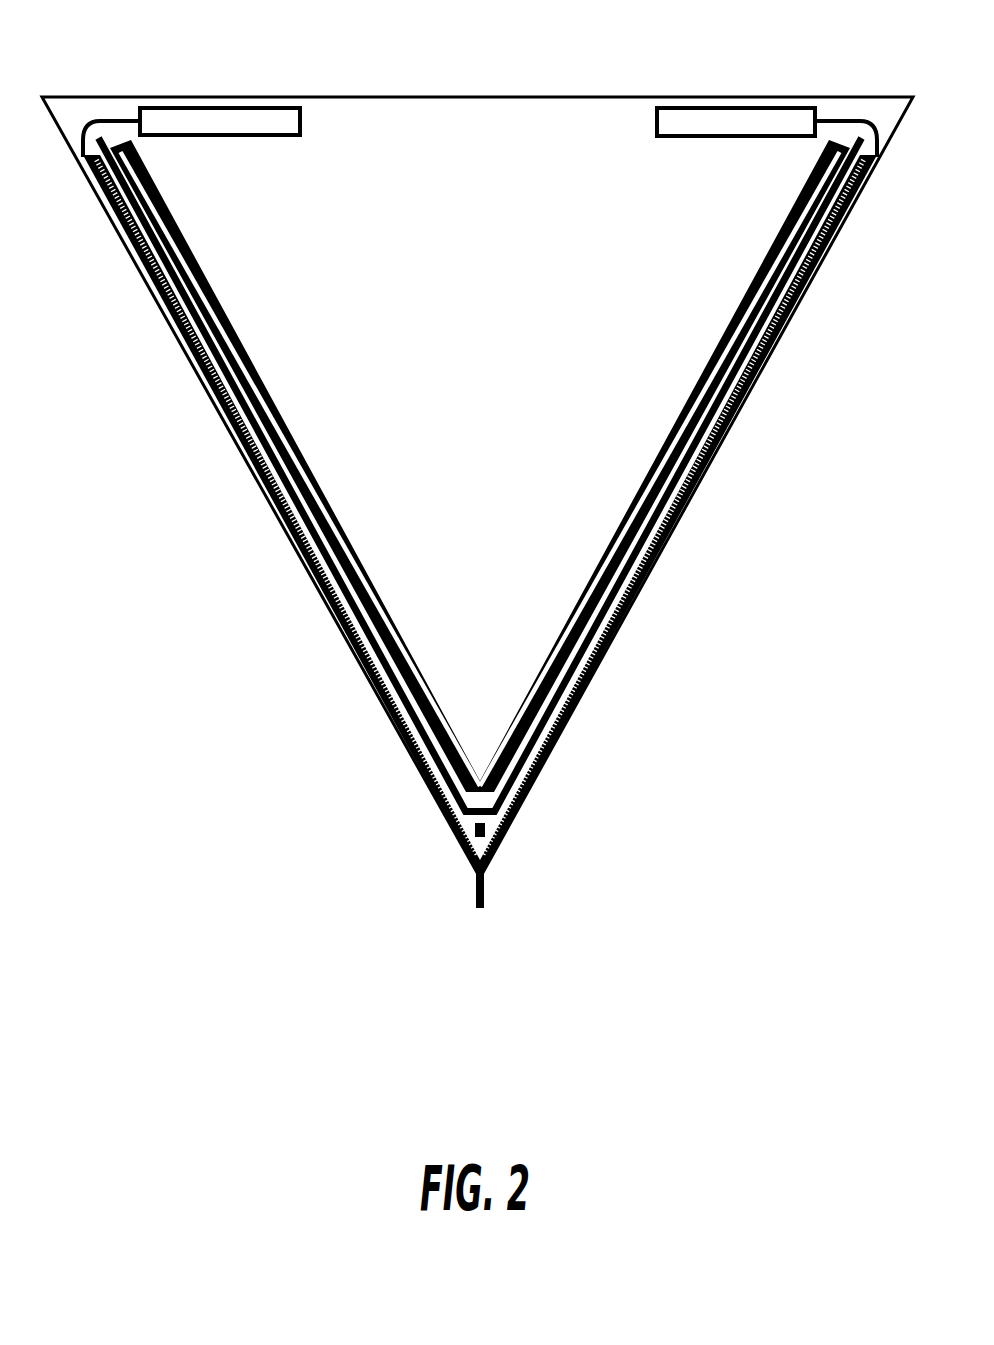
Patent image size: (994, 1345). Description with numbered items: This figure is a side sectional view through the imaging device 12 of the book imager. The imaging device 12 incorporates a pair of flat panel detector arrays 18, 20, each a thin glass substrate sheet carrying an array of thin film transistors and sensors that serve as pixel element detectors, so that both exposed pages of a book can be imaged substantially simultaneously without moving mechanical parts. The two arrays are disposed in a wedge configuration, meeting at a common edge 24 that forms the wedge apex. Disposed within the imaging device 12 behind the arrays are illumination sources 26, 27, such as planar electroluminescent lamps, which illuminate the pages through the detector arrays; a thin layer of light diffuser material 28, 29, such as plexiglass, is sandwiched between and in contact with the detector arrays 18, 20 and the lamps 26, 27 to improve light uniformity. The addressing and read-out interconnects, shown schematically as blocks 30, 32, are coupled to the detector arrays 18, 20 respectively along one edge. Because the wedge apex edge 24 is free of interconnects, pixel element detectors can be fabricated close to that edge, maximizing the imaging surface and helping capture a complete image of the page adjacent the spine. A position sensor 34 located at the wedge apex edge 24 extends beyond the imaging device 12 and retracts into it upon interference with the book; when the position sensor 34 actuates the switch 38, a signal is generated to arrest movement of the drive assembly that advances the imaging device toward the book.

The imaging device 12 is at (214, 782).
The flat panel detector array 18 is at (585, 690).
The flat panel detector array 20 is at (338, 622).
The common edge 24 is at (478, 877).
The illumination source 26 is at (654, 481).
The illumination source 27 is at (283, 462).
The light diffuser material 28 is at (758, 323).
The light diffuser material 29 is at (213, 363).
The addressing and read-out interconnects 30 is at (738, 120).
The addressing and read-out interconnects 32 is at (241, 120).
The position sensor 34 is at (483, 906).
The switch 38 is at (481, 818).